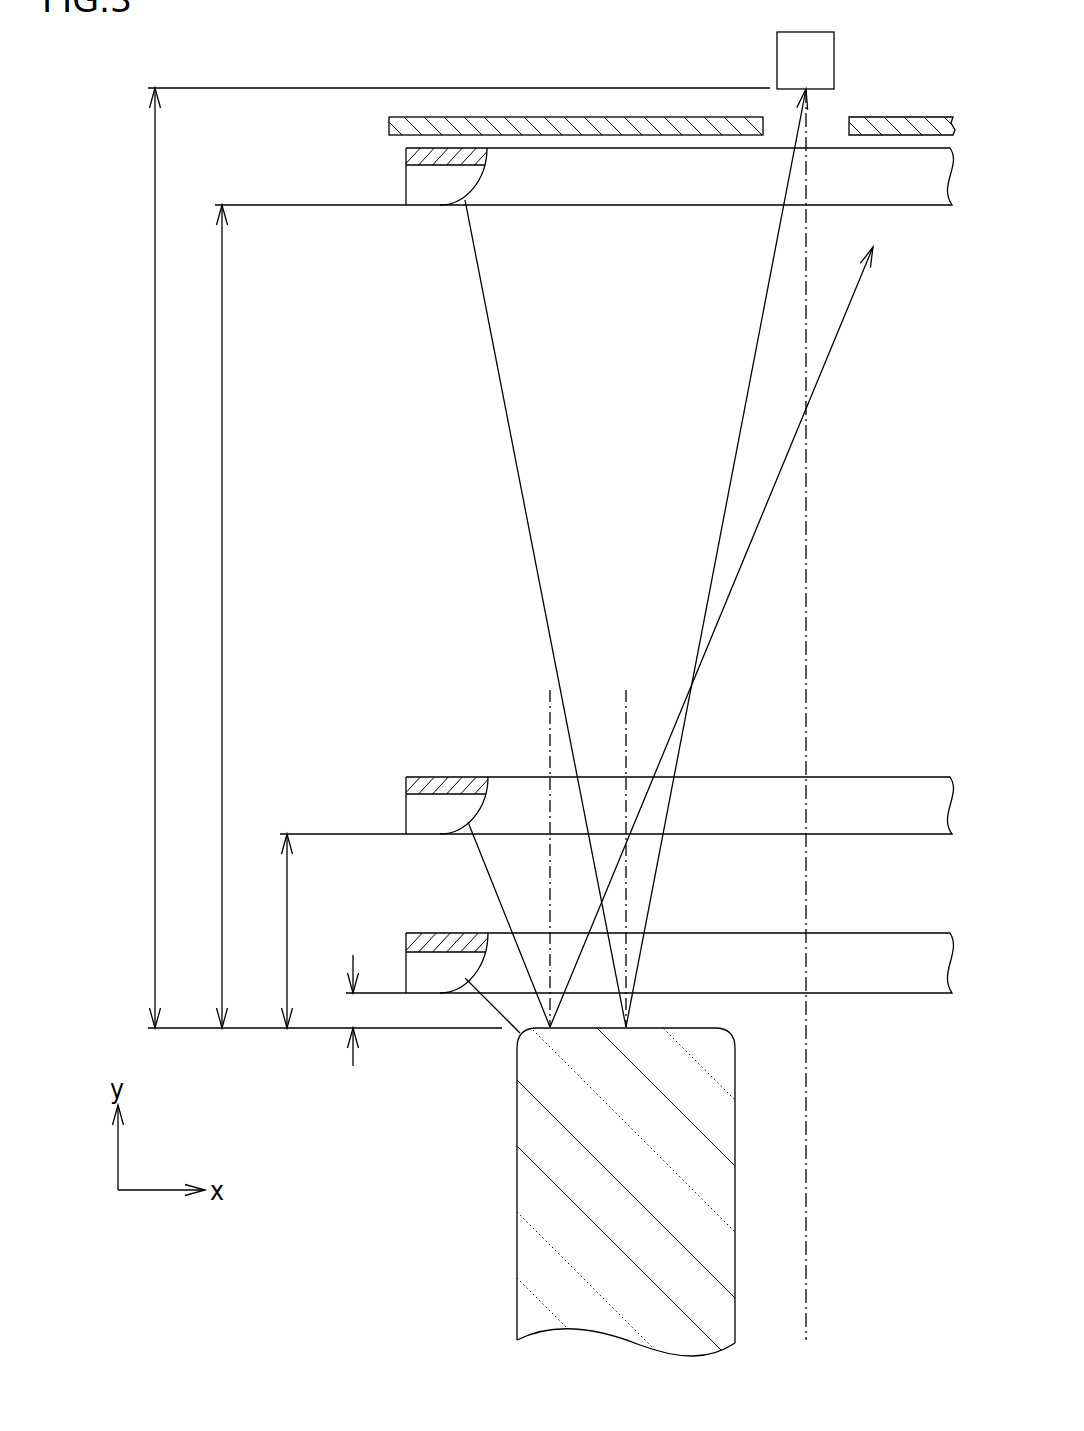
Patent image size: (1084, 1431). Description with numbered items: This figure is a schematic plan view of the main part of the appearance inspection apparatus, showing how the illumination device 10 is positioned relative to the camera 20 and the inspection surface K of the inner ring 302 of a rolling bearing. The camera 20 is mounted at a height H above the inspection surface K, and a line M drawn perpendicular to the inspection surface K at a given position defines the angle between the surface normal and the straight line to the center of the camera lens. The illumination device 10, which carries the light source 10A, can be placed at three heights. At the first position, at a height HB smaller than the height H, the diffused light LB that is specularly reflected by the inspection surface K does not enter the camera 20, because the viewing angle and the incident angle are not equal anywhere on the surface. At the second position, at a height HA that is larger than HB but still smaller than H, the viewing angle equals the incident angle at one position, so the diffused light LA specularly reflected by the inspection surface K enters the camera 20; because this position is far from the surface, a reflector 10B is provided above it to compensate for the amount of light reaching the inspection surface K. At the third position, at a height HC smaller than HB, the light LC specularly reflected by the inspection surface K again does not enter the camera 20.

The camera 20 is at (835, 60).
The reflector 10B is at (389, 126).
The illumination device 10 is at (641, 188).
The light source 10A is at (406, 153).
The inner ring 302 is at (550, 1137).
The inspection surface K is at (693, 1028).
The line perpendicular to the inspection surface M is at (580, 840).
The diffused light LA is at (545, 613).
The diffused light LB is at (509, 924).
The light LC is at (492, 999).
The height H is at (450, 558).
The height HA is at (296, 616).
The height HB is at (328, 931).
The height HC is at (362, 1010).